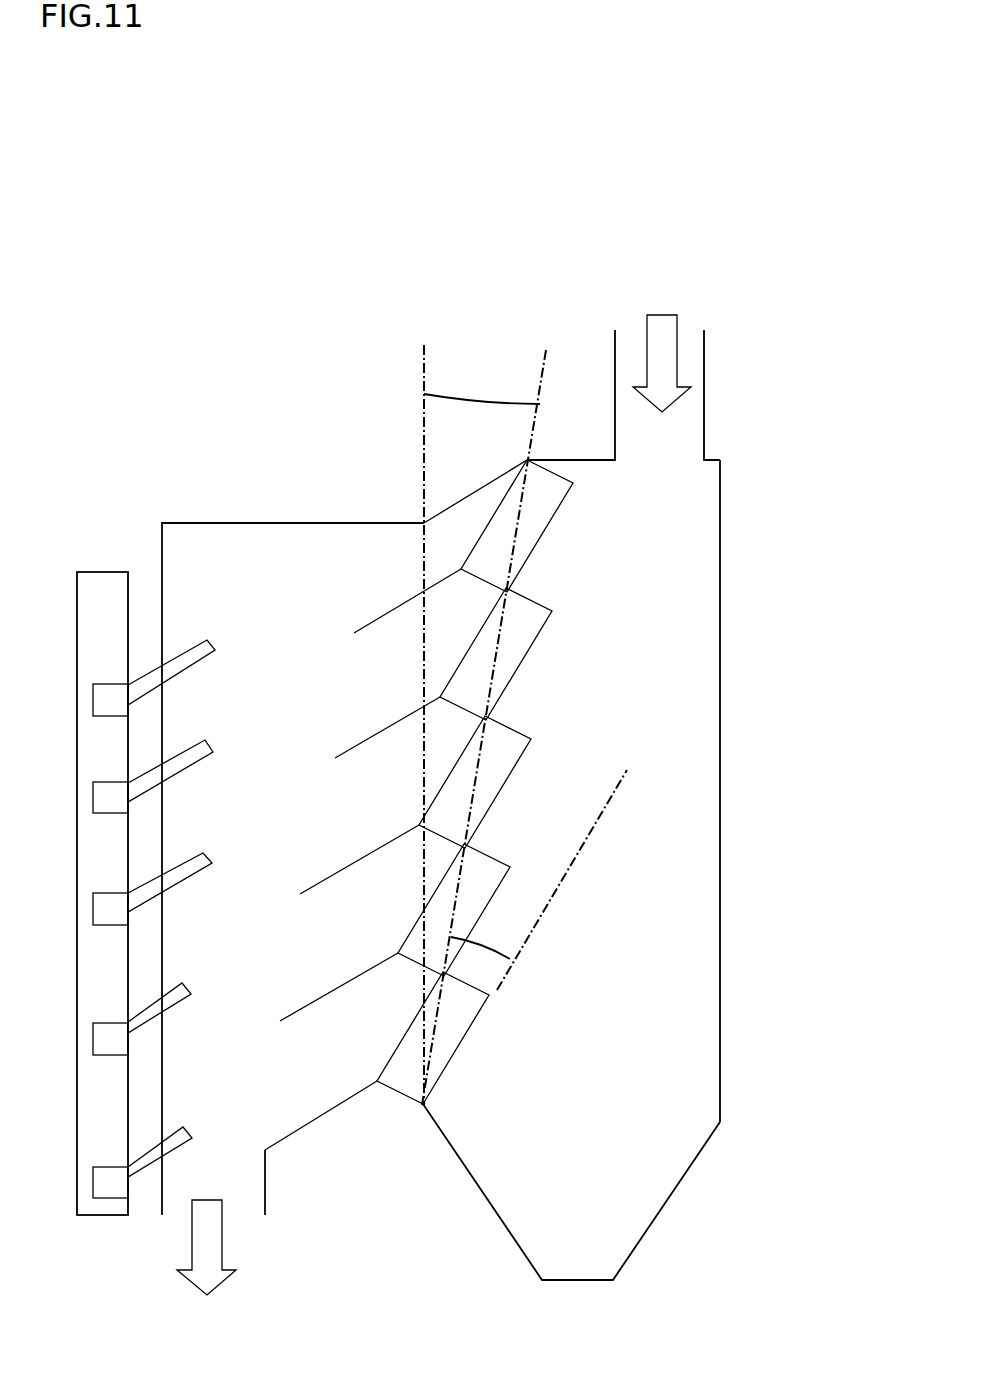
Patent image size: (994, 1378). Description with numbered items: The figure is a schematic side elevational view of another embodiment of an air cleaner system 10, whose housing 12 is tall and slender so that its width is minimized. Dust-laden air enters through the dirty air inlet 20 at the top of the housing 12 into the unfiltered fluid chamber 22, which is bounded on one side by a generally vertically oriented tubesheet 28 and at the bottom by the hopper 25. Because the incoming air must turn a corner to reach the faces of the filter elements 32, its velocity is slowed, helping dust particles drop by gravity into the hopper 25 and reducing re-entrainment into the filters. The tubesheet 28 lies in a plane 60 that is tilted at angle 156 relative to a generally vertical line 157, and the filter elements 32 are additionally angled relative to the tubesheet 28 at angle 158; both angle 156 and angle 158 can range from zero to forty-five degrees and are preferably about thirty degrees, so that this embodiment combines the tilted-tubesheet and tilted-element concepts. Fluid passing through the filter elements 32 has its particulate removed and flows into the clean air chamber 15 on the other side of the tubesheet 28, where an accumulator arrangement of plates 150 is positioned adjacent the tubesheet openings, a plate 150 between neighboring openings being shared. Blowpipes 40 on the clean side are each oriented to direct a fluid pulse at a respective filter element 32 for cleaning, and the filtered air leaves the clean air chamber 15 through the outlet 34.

The air cleaner system 10 is at (762, 195).
The housing 12 is at (720, 768).
The clean air chamber 15 is at (245, 522).
The air inlet 20 is at (695, 421).
The unfiltered fluid chamber 22 is at (718, 944).
The hopper 25 is at (566, 1282).
The tubesheet 28 is at (517, 587).
The filter element 32 is at (537, 530).
The outlet 34 is at (265, 1202).
The blowpipe 40 is at (194, 646).
The plane 60 is at (543, 378).
The plate 150 is at (462, 499).
The angle 156 is at (481, 394).
The generally vertical line 157 is at (423, 414).
The angle 158 is at (495, 944).